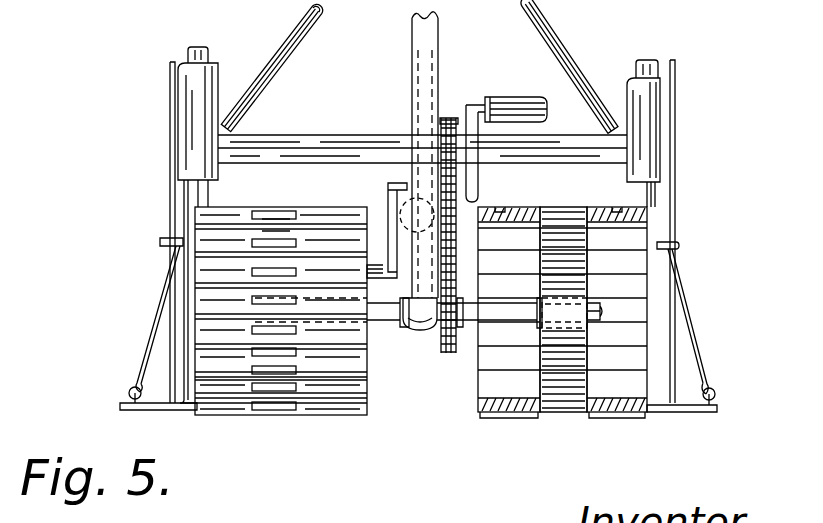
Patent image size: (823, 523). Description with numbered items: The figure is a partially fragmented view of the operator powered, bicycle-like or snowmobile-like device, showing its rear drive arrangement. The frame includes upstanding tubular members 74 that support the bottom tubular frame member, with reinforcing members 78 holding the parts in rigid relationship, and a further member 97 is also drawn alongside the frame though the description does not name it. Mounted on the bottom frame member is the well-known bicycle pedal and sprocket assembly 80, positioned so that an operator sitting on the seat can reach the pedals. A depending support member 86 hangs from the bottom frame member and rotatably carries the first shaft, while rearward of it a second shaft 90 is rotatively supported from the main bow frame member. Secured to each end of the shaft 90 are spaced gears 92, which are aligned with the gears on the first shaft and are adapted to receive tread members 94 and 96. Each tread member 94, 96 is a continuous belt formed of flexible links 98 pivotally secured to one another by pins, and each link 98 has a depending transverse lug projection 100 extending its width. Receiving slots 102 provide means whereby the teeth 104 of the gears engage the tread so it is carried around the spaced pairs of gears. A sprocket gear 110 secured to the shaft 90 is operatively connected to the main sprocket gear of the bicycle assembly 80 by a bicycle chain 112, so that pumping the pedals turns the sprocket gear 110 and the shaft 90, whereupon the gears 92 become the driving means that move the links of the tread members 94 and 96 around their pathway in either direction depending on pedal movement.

The upstanding tubular members 74 is at (187, 124).
The reinforcing members 78 is at (280, 62).
The bicycle pedal and sprocket assembly 80 is at (509, 90).
The depending support member 86 is at (390, 212).
The second shaft 90 is at (385, 323).
The spaced gears 92 is at (565, 400).
The tread member 94 is at (304, 276).
The tread member 96 is at (638, 241).
The tie rod 97 is at (184, 302).
The flexible links 98 is at (322, 215).
The transverse lug projection 100 is at (367, 393).
The receiving slots 102 is at (262, 405).
The teeth 104 is at (284, 222).
The sprocket gear 110 is at (455, 335).
The bicycle chain 112 is at (451, 118).